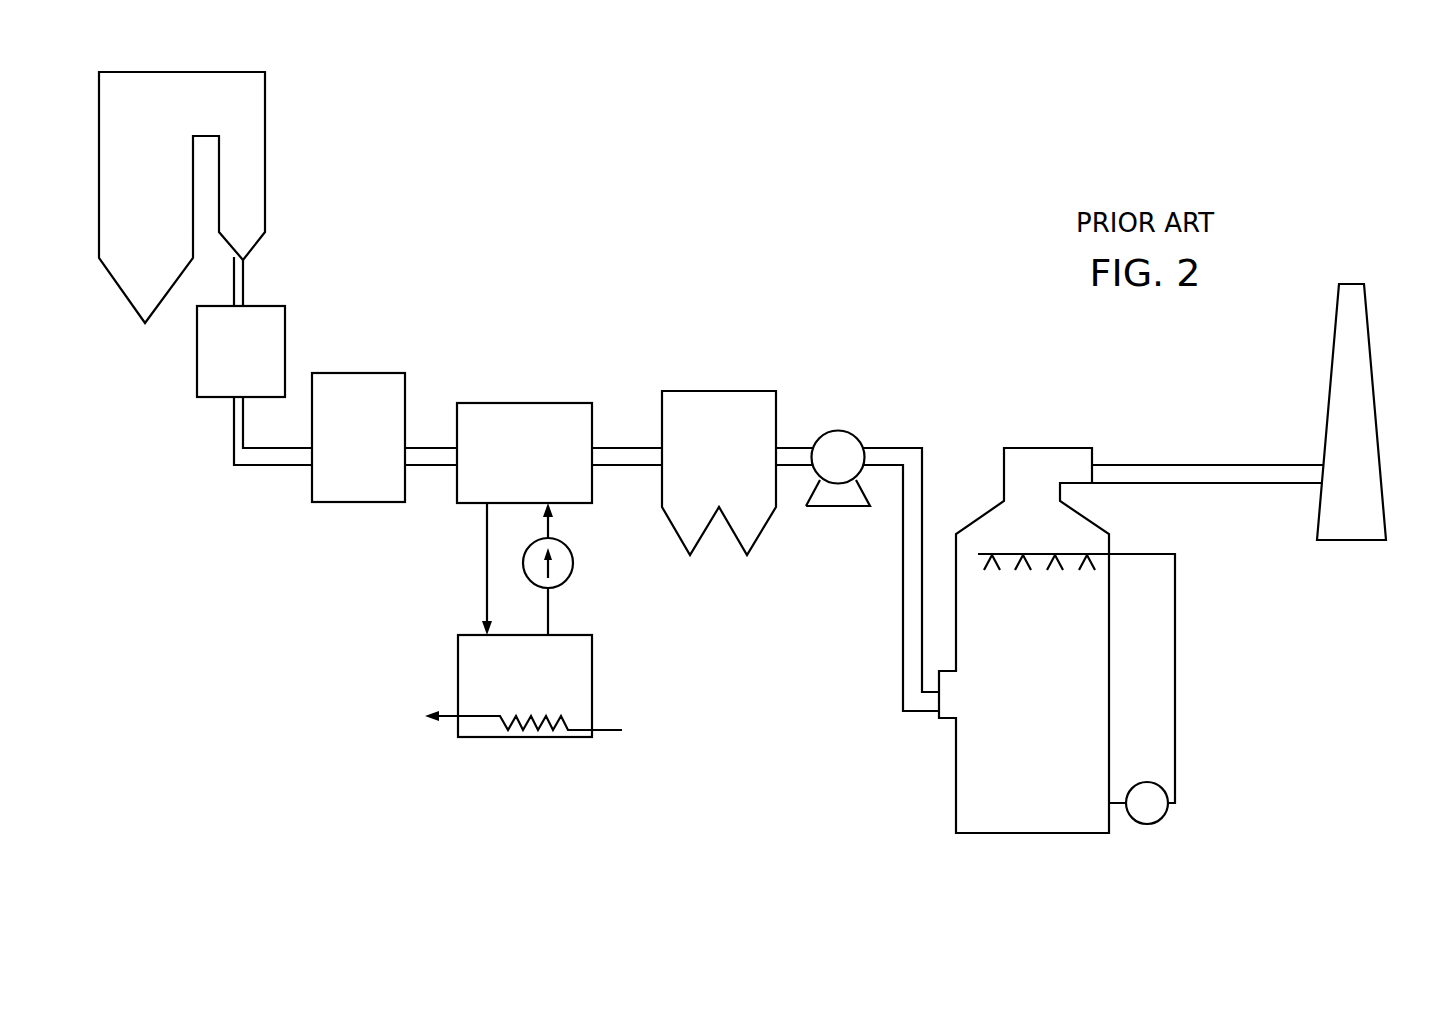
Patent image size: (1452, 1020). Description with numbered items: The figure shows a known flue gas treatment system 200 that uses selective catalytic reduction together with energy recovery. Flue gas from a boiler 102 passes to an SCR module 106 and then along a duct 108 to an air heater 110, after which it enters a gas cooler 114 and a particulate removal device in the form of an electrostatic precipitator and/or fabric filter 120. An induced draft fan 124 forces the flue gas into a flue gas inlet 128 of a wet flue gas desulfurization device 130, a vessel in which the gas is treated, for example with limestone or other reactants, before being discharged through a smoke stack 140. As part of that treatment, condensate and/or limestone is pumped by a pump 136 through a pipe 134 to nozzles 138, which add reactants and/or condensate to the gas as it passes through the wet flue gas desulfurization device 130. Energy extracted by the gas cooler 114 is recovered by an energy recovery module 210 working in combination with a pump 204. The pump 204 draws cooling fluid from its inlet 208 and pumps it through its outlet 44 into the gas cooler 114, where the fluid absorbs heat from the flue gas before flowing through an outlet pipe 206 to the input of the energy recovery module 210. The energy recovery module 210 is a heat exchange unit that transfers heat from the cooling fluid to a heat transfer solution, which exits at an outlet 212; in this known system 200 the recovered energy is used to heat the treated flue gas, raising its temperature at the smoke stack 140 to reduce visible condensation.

The known system 200 is at (815, 195).
The boiler 102 is at (265, 175).
The SCR module 106 is at (285, 333).
The flue gas duct 108 is at (240, 466).
The air heater 110 is at (390, 373).
The gas cooler 114 is at (532, 403).
The electrostatic precipitator and/or fabric filter (ESP/FF) 120 is at (720, 391).
The induced draft fan (IDF) 124 is at (838, 430).
The flue gas inlet 128 is at (939, 718).
The wet flue gas desulfurization device (WFGD) 130 is at (1048, 448).
The pipe 134 is at (1175, 617).
The pump 136 is at (1147, 824).
The nozzles 138 is at (1000, 565).
The smoke stack 140 is at (1367, 318).
The pump 204 is at (570, 577).
The outlet pipe 206 is at (487, 572).
The inlet 208 is at (551, 620).
The energy recovery module 210 is at (592, 668).
The outlet 212 is at (447, 720).
The outlet 44 is at (551, 525).